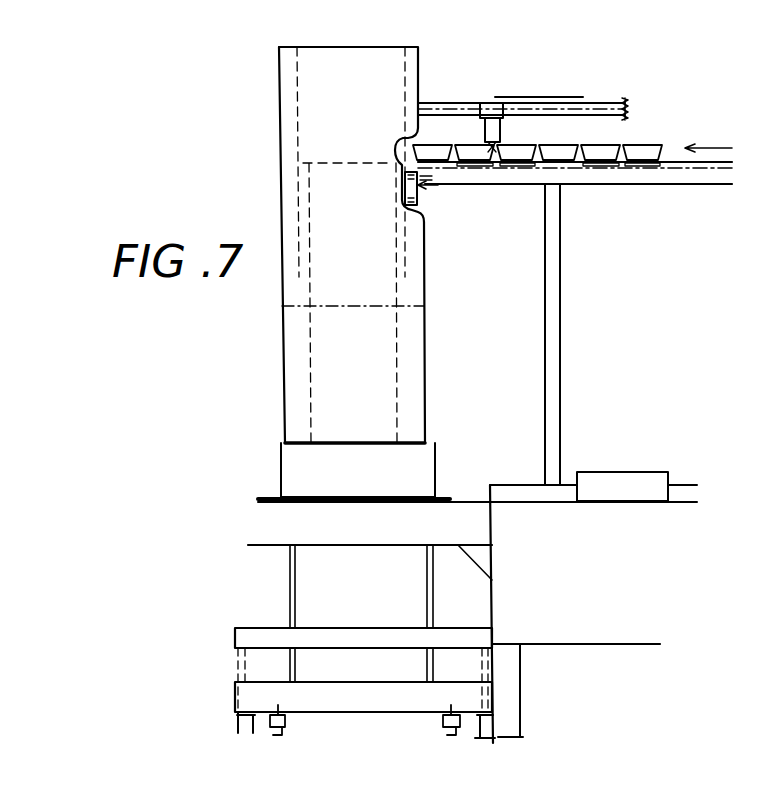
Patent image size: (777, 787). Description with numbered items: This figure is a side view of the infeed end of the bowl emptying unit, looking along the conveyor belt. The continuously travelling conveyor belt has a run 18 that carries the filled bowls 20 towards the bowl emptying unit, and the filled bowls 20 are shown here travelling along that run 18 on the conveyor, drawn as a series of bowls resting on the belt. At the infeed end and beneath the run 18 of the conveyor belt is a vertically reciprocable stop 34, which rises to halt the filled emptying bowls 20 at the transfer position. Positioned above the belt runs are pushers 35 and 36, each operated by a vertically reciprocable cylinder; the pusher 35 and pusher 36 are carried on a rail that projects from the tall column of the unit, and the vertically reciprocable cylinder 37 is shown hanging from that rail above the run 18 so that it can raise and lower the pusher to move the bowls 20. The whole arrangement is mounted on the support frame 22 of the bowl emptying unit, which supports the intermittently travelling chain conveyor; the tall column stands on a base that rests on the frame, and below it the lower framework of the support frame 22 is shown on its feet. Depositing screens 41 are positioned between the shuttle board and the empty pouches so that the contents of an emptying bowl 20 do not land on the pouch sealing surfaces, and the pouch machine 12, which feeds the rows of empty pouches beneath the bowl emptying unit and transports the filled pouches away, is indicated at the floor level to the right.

The pouch machine 12 is at (645, 617).
The run of conveyor belt 18 is at (675, 170).
The filled bowls 20 is at (641, 149).
The support frame 22 is at (432, 601).
The vertically reciprocable stop 34 is at (420, 195).
The pusher 35 is at (553, 103).
The pusher 36 is at (443, 103).
The vertically reciprocable cylinder 37 is at (478, 105).
The depositing screens 41 is at (420, 468).